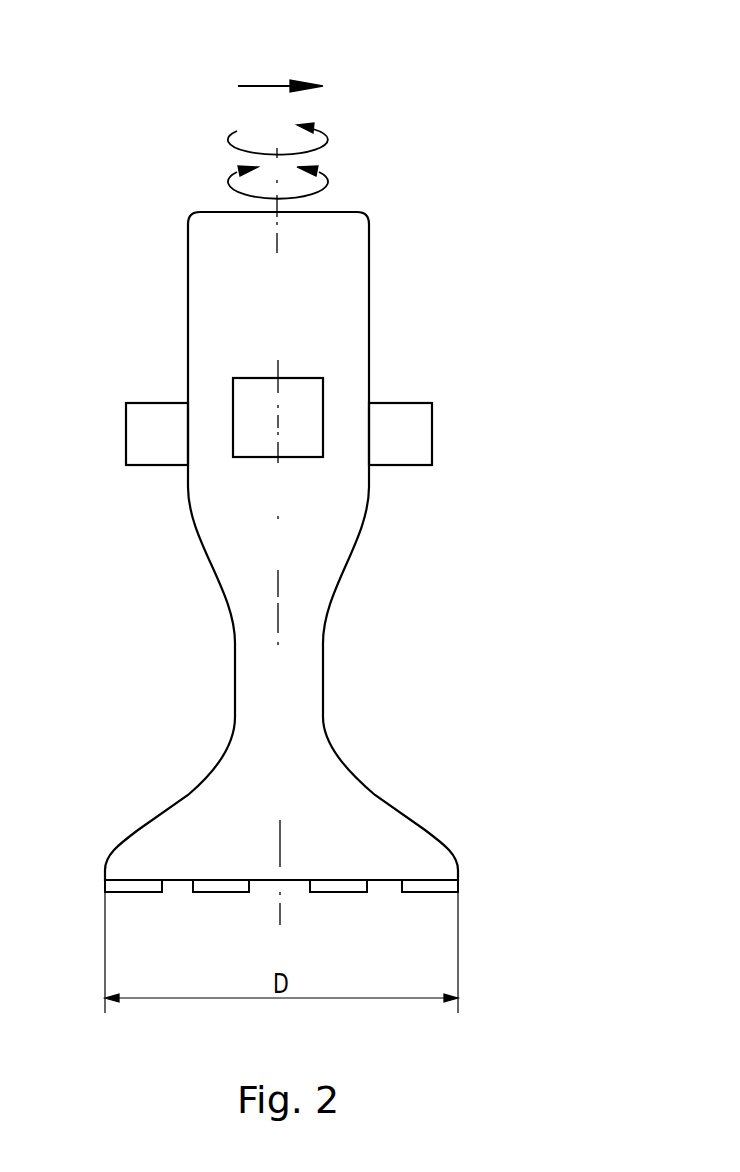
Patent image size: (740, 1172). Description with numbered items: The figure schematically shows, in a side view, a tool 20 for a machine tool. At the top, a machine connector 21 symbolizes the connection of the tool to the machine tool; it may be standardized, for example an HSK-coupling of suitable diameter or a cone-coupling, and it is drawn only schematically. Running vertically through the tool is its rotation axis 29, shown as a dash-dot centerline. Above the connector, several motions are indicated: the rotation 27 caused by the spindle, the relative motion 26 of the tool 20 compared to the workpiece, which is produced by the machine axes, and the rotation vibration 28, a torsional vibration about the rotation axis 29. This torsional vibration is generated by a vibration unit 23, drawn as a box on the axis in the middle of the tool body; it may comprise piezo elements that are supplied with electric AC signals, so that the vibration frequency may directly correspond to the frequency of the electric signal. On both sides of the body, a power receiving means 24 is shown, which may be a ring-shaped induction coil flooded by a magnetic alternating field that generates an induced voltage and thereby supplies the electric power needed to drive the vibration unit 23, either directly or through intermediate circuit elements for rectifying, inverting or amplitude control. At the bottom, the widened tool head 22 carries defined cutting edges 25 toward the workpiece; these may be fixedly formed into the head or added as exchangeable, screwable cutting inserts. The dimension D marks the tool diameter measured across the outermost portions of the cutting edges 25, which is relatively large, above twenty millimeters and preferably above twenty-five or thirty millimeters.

The tool 20 is at (287, 556).
The machine connector 21 is at (158, 233).
The tool head 22 is at (98, 849).
The vibration unit 23 is at (250, 407).
The power receiving means 24 is at (137, 437).
The cutting edges 25 is at (140, 892).
The relative motion 26 is at (258, 85).
The rotation 27 is at (327, 137).
The rotation vibration 28 is at (327, 182).
The rotation axis 29 is at (278, 597).